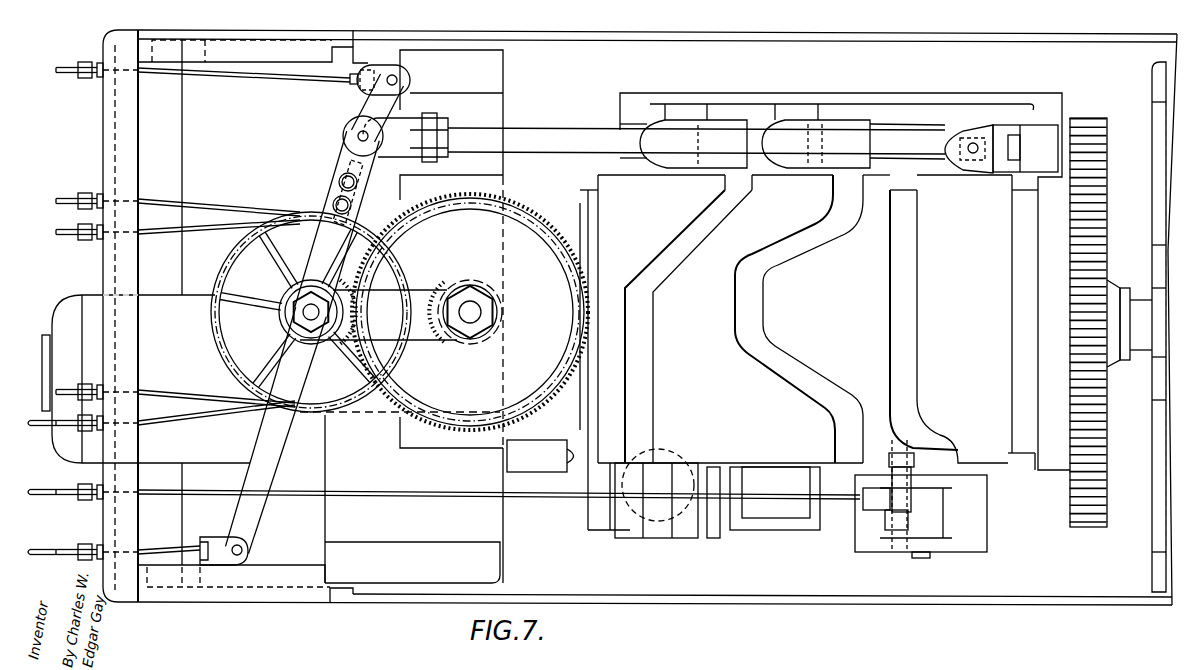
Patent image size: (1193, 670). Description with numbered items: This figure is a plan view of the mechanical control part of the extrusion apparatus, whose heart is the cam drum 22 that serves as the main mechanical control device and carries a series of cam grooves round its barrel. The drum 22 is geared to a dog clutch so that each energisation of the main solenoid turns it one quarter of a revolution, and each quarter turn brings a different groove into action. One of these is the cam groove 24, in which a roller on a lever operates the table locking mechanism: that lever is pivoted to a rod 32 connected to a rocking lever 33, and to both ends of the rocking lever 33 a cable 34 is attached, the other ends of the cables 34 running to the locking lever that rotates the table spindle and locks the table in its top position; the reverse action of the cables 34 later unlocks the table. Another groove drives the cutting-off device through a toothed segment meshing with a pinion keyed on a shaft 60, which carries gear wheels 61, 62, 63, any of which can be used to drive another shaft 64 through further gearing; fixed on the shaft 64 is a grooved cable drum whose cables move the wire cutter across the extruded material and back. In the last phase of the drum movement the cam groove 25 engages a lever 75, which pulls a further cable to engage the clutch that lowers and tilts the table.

The drum 22 is at (616, 186).
The cam groove 24 is at (756, 318).
The cam groove 25 is at (903, 318).
The rod 32 is at (372, 107).
The rocking lever 33 is at (262, 436).
The cable 34 is at (236, 79).
The shaft 60 is at (483, 315).
The gear wheel 61 is at (500, 196).
The gear wheel 62 is at (528, 210).
The gear wheel 63 is at (547, 224).
The shaft 64 is at (300, 312).
The lever 75 is at (925, 525).